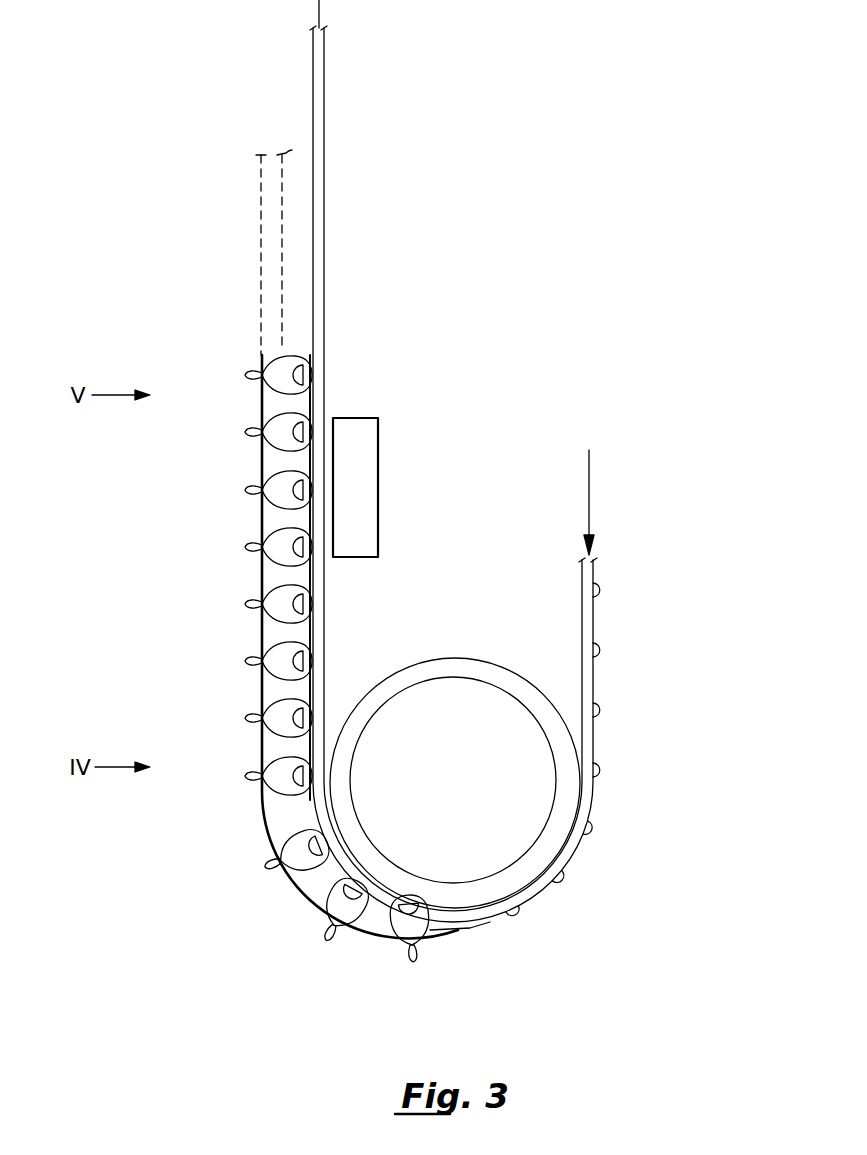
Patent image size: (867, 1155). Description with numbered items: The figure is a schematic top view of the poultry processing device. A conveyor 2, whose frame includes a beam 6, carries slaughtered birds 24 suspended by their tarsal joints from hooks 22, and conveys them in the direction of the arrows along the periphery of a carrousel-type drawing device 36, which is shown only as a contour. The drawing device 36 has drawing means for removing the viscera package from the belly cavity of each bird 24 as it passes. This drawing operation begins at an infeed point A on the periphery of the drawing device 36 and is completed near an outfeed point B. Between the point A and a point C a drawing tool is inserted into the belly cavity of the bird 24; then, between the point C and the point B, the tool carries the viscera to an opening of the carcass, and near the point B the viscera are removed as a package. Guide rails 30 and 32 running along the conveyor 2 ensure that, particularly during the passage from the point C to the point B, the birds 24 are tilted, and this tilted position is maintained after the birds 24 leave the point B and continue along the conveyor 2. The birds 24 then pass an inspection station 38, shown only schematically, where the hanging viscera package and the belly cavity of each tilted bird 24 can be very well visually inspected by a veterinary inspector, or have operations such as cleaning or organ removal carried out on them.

The conveyor 2 is at (377, 237).
The beam 6 is at (324, 127).
The hook 22 is at (303, 607).
The slaughtered bird 24 is at (600, 590).
The guide rail 30 is at (259, 350).
The guide rail 32 is at (429, 935).
The drawing device 36 is at (505, 725).
The inspection station 38 is at (368, 443).
The infeed point A is at (572, 779).
The outfeed point B is at (318, 781).
The point C is at (450, 932).